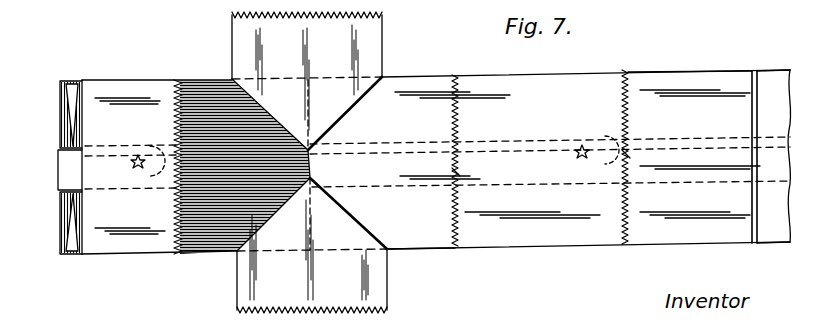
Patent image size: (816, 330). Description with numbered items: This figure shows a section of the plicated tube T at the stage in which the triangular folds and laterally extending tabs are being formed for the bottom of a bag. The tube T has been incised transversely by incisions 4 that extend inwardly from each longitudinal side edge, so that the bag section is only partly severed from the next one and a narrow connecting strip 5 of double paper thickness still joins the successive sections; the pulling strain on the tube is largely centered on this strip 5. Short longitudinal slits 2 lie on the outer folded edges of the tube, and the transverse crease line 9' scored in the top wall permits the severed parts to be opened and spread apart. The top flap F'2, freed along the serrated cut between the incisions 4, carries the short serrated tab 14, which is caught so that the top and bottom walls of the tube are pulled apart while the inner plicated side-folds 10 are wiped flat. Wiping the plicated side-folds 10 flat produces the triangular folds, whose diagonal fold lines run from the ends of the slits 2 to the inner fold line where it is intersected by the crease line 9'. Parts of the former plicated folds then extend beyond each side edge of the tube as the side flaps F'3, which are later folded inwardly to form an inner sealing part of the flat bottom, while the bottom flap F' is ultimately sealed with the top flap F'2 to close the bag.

The longitudinal slit 2 is at (683, 74).
The incision 4 is at (622, 262).
The connecting strip 5 is at (150, 178).
The transverse crease line 9' is at (543, 141).
The plicated side-fold 10 is at (70, 122).
The serrated tab 14 is at (456, 170).
The bottom flap F' is at (283, 146).
The top flap F'2 is at (569, 172).
The side flap F'3 is at (309, 162).
The plicated tube T is at (436, 162).